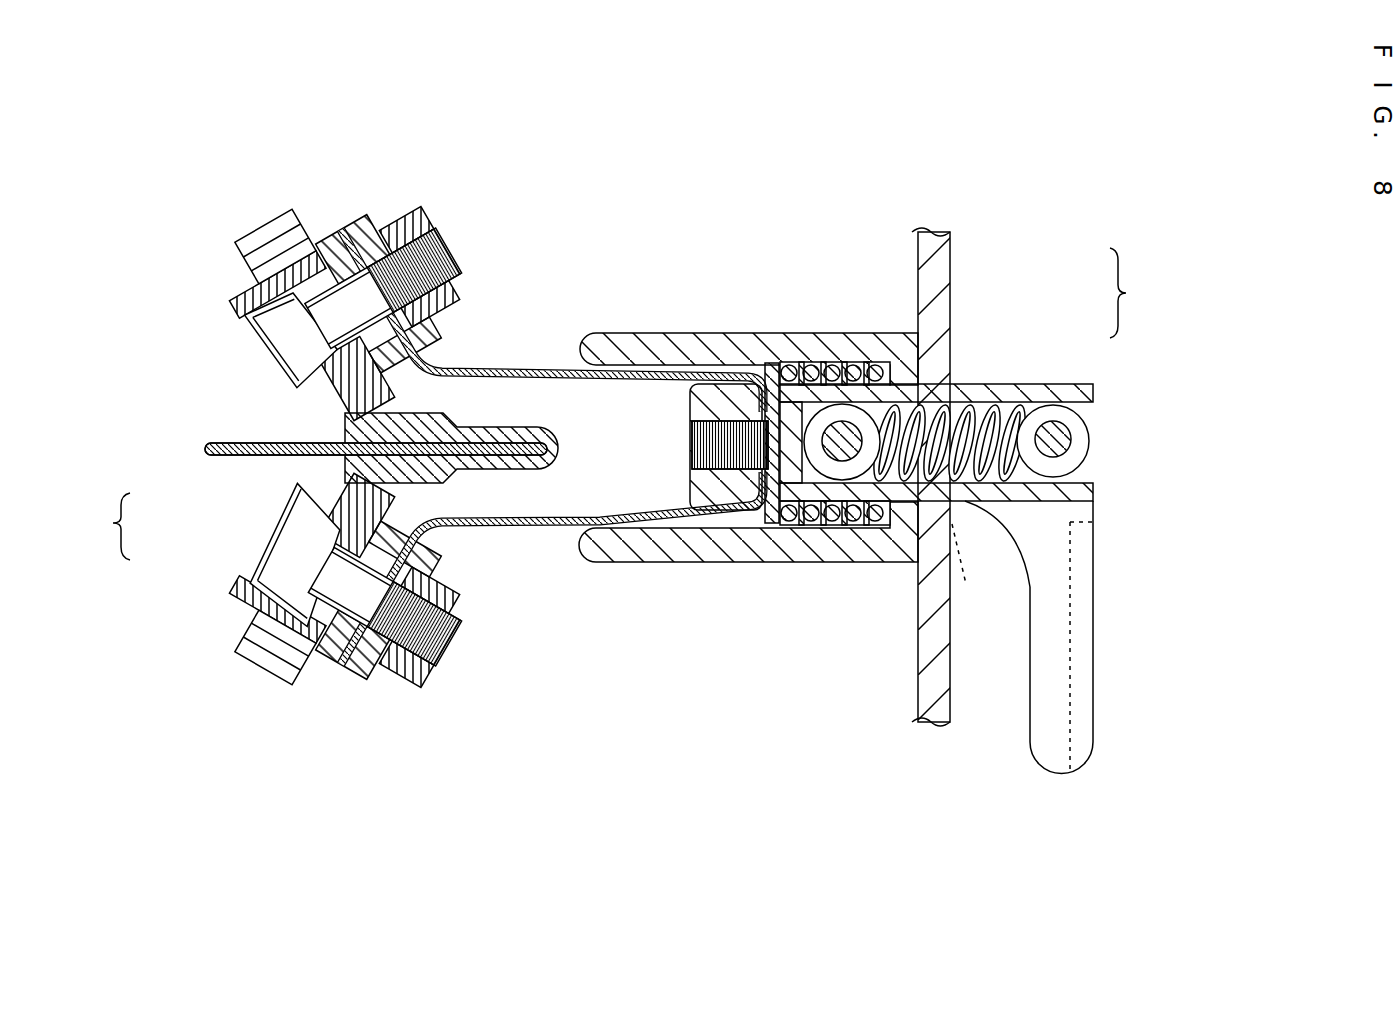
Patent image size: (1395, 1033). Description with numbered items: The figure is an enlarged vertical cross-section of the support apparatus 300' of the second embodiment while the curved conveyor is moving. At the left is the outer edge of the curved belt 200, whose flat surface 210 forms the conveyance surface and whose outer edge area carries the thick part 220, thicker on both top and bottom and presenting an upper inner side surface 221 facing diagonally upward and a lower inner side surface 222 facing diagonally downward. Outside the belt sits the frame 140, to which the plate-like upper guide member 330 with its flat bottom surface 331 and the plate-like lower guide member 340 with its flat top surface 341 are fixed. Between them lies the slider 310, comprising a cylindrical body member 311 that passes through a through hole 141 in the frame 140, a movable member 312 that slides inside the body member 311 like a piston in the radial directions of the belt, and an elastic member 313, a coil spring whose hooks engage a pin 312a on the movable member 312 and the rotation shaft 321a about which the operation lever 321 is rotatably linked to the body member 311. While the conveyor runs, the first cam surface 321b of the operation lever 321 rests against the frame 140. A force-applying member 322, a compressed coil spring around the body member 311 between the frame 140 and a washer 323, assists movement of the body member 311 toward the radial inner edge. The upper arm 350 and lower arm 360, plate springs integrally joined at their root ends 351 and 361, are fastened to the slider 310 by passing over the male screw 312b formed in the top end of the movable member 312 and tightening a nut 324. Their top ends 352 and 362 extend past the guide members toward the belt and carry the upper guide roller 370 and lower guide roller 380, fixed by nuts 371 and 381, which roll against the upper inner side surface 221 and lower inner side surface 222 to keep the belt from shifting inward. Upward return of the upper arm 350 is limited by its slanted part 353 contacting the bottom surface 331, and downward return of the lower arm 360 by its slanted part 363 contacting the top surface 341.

The frame 140 is at (948, 722).
The through hole 141 is at (927, 515).
The curved belt 200 is at (94, 526).
The flat surface 210 is at (262, 457).
The thick part 220 is at (266, 472).
The upper inner side surface 221 is at (338, 398).
The lower inner side surface 222 is at (280, 441).
The support apparatus 300' is at (869, 129).
The slider 310 is at (1145, 293).
The body member 311 is at (988, 390).
The movable member 312 is at (900, 290).
The pin 312a is at (832, 520).
The male screw 312b is at (690, 447).
The elastic member 313 is at (1003, 405).
The operation lever 321 is at (1050, 657).
The rotation shaft 321a is at (1062, 452).
The first cam surface 321b is at (988, 569).
The force-applying member 322 is at (843, 527).
The washer 323 is at (772, 530).
The nut 324 is at (703, 402).
The upper guide member 330 is at (585, 335).
The bottom surface 331 is at (755, 352).
The lower guide member 340 is at (590, 565).
The top surface 341 is at (725, 565).
The upper arm 350 is at (538, 366).
The root end 351 is at (795, 368).
The top end 352 is at (455, 330).
The slanted part 353 is at (690, 365).
The lower arm 360 is at (540, 528).
The root end 361 is at (768, 530).
The top end 362 is at (455, 548).
The slanted part 363 is at (668, 565).
The upper guide roller 370 is at (272, 222).
The nut 371 is at (405, 225).
The lower guide roller 380 is at (280, 672).
The nut 381 is at (415, 675).